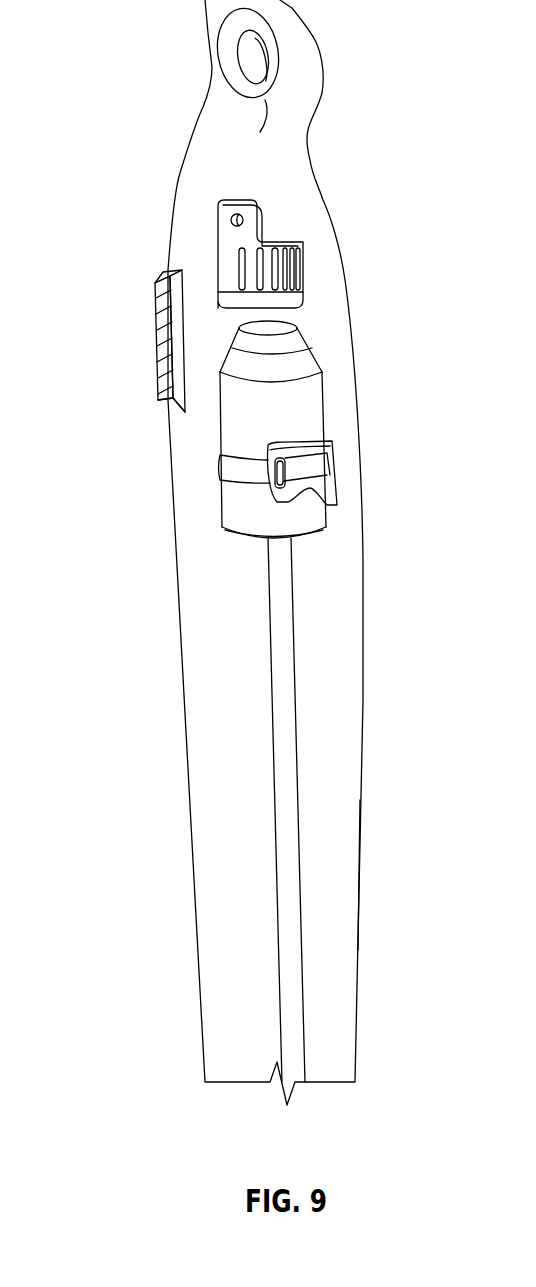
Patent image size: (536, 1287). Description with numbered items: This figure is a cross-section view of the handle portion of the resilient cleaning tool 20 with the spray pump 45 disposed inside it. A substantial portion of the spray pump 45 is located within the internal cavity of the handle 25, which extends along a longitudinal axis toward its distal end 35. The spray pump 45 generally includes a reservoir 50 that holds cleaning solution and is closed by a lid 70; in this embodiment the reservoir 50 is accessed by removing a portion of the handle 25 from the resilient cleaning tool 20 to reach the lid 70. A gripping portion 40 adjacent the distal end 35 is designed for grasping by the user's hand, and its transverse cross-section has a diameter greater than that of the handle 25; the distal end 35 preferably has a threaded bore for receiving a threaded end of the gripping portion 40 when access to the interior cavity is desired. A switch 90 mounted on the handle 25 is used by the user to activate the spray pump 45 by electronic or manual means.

The resilient cleaning tool 20 is at (133, 134).
The handle 25 is at (188, 755).
The distal end 35 is at (363, 540).
The gripping portion 40 is at (358, 880).
The spray pump 45 is at (283, 592).
The reservoir 50 is at (312, 396).
The lid 70 is at (303, 263).
The switch 90 is at (128, 333).